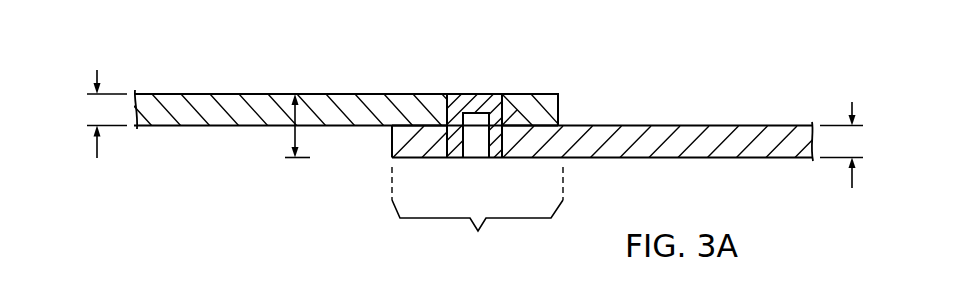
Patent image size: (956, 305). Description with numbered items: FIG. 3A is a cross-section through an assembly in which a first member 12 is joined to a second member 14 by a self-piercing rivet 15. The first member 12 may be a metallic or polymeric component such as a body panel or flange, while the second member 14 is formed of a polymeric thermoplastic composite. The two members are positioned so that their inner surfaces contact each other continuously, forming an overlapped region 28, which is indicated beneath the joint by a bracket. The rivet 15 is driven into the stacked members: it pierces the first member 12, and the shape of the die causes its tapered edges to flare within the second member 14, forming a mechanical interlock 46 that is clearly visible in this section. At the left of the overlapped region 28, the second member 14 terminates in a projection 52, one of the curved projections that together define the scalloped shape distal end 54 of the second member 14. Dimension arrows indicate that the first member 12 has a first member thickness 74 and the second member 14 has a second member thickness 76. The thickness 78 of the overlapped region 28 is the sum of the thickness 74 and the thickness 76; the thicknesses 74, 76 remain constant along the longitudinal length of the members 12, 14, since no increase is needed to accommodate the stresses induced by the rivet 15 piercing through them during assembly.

The first member 12 is at (178, 82).
The second member 14 is at (750, 170).
The self-piercing rivet 15 is at (487, 102).
The overlapped region 28 is at (477, 215).
The mechanical interlock 46 is at (495, 152).
The projection 52 is at (390, 160).
The scalloped shape distal end 54 is at (372, 138).
The first member thickness 74 is at (98, 110).
The second member thickness 76 is at (855, 140).
The thickness of the overlapped region 78 is at (290, 132).